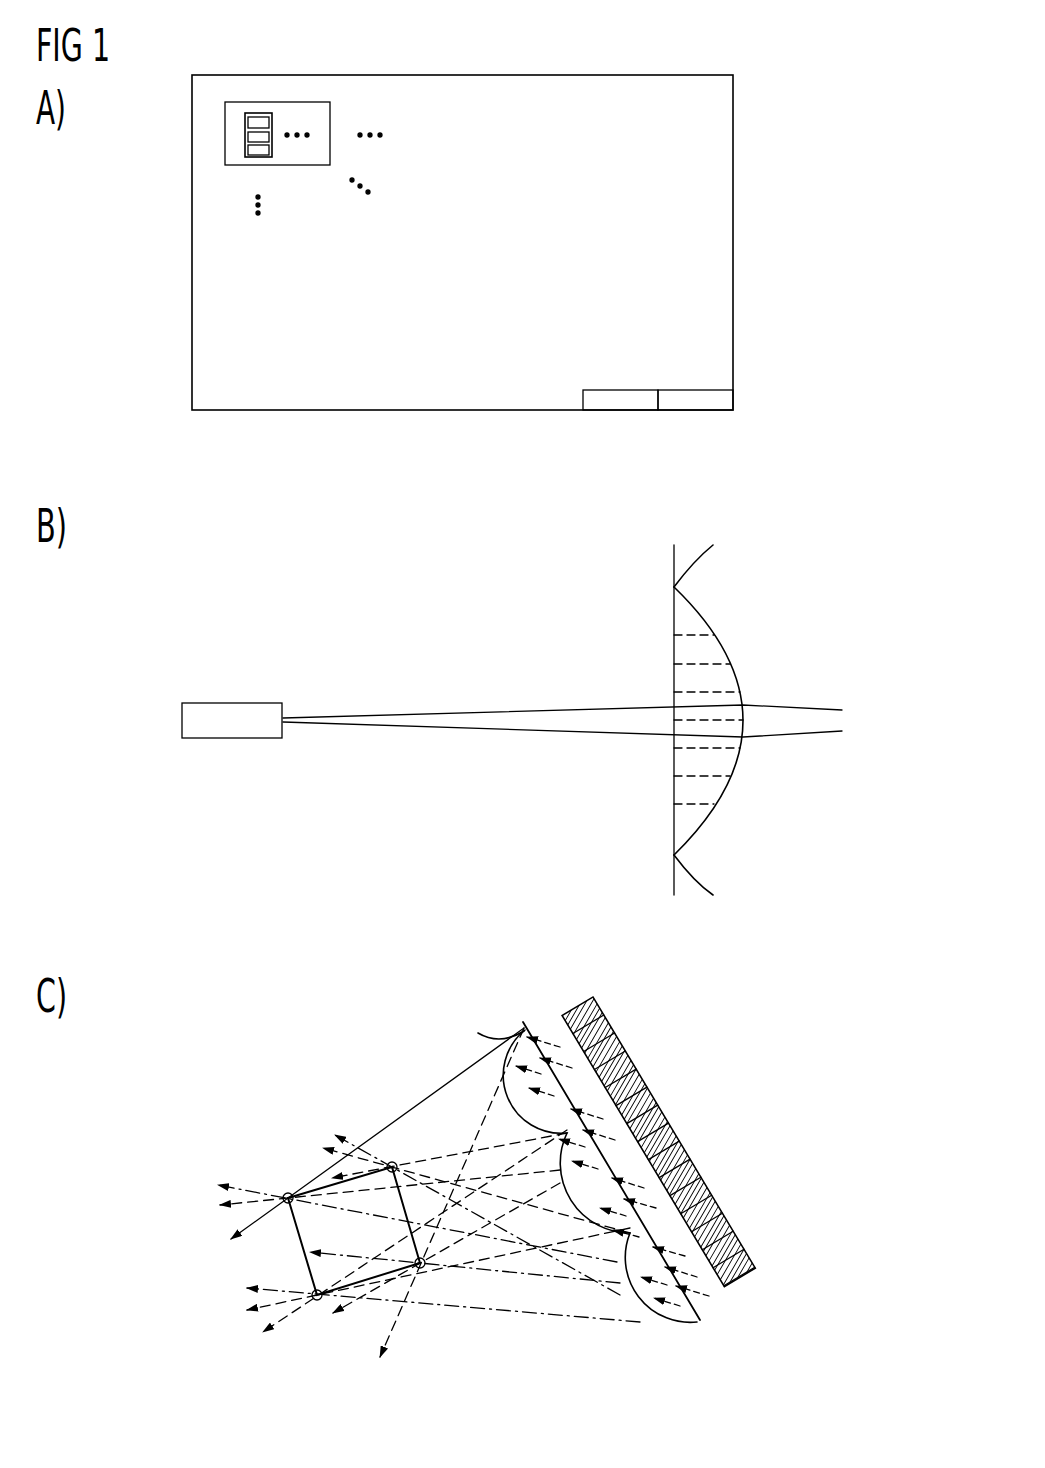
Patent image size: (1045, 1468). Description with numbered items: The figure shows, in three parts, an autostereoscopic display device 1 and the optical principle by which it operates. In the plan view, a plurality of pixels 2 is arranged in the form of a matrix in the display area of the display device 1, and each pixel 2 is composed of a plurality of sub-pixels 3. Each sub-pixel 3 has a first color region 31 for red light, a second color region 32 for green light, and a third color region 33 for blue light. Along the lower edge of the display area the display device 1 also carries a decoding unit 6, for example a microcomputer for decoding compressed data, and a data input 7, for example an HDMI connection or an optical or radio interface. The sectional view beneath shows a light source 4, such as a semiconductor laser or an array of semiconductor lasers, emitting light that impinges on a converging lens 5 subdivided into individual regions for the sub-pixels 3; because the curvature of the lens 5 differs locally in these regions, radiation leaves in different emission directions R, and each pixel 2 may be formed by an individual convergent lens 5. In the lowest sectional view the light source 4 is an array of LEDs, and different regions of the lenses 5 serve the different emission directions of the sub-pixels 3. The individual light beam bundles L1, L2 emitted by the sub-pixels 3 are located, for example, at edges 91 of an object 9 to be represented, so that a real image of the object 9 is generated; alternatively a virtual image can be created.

In FIG. 1A, the autostereoscopic display device 1 is at (748, 60).
In FIG. 1C, the autostereoscopic display device 1 is at (710, 1066).
In FIG. 1A, the pixel 2 is at (283, 102).
In FIG. 1B, the pixel 2 is at (717, 720).
In FIG. 1C, the pixel 2 is at (613, 1203).
In FIG. 1A, the sub-pixel 3 is at (125, 95).
In FIG. 1B, the sub-pixel 3 is at (727, 648).
In FIG. 1C, the sub-pixel 3 is at (643, 1328).
In FIG. 1A, the first color region 31 is at (248, 122).
In FIG. 1A, the second color region 32 is at (248, 137).
In FIG. 1A, the third color region 33 is at (248, 150).
In FIG. 1B, the light source 4 is at (232, 703).
In FIG. 1C, the light source 4 is at (748, 1274).
In FIG. 1B, the converging lens 5 is at (680, 827).
In FIG. 1C, the converging lens 5 is at (700, 1320).
In FIG. 1A, the decoding unit 6 is at (620, 411).
In FIG. 1A, the data input 7 is at (698, 411).
In FIG. 1C, the object to be represented 9 is at (337, 1218).
In FIG. 1C, the edge of the object 91 is at (288, 1192).
In FIG. 1B, the emission direction R is at (796, 738).
In FIG. 1C, the first light ray L1 is at (410, 1116).
In FIG. 1C, the second light ray L2 is at (507, 1280).